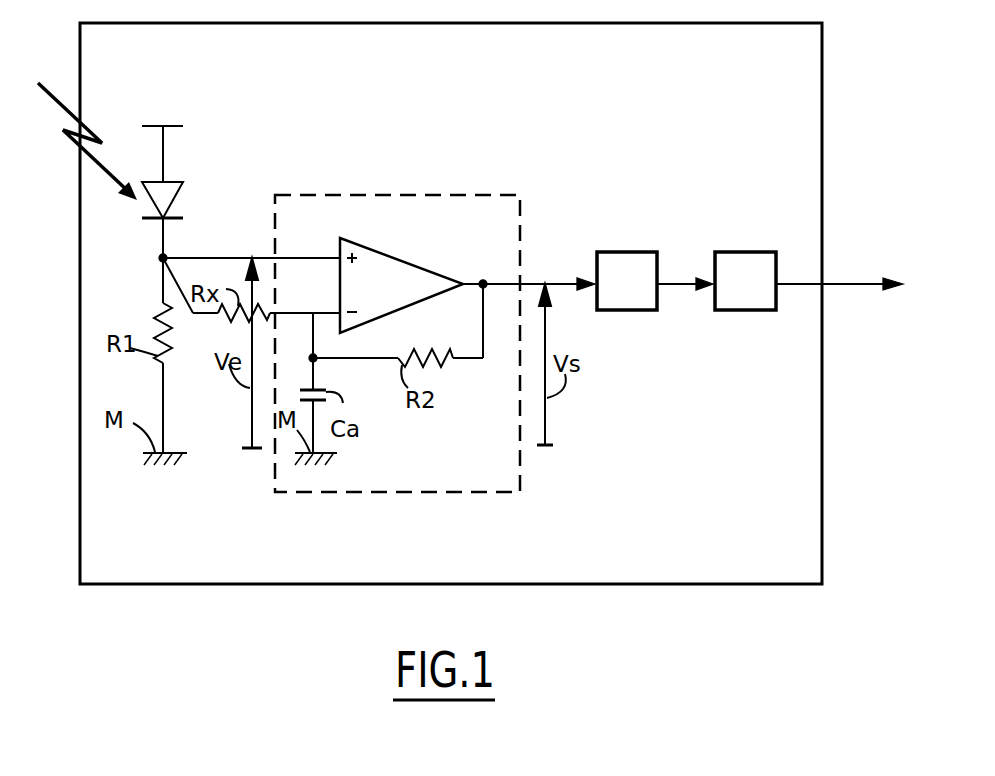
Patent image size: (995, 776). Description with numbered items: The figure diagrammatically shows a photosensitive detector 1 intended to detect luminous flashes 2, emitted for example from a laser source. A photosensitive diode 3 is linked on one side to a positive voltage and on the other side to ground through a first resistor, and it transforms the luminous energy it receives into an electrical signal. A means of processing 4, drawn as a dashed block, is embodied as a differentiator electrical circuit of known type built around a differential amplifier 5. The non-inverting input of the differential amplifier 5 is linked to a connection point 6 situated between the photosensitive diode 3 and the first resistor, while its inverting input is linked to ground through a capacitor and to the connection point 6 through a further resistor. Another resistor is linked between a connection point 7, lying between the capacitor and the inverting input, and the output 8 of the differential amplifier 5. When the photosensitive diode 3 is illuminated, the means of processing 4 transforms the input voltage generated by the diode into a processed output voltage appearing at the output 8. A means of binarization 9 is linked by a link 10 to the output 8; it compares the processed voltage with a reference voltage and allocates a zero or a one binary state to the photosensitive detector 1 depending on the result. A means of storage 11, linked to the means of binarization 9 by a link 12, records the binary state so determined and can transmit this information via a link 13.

The photosensitive detector 1 is at (715, 23).
The luminous flashes 2 is at (70, 128).
The photosensitive diode 3 is at (163, 190).
The means of processing 4 is at (427, 493).
The differential amplifier 5 is at (405, 276).
The connection point 6 is at (160, 259).
The connection point 7 is at (311, 358).
The output 8 is at (483, 279).
The means of binarization 9 is at (627, 293).
The link 10 is at (560, 280).
The means of storage 11 is at (740, 290).
The link 12 is at (678, 278).
The link 13 is at (852, 281).